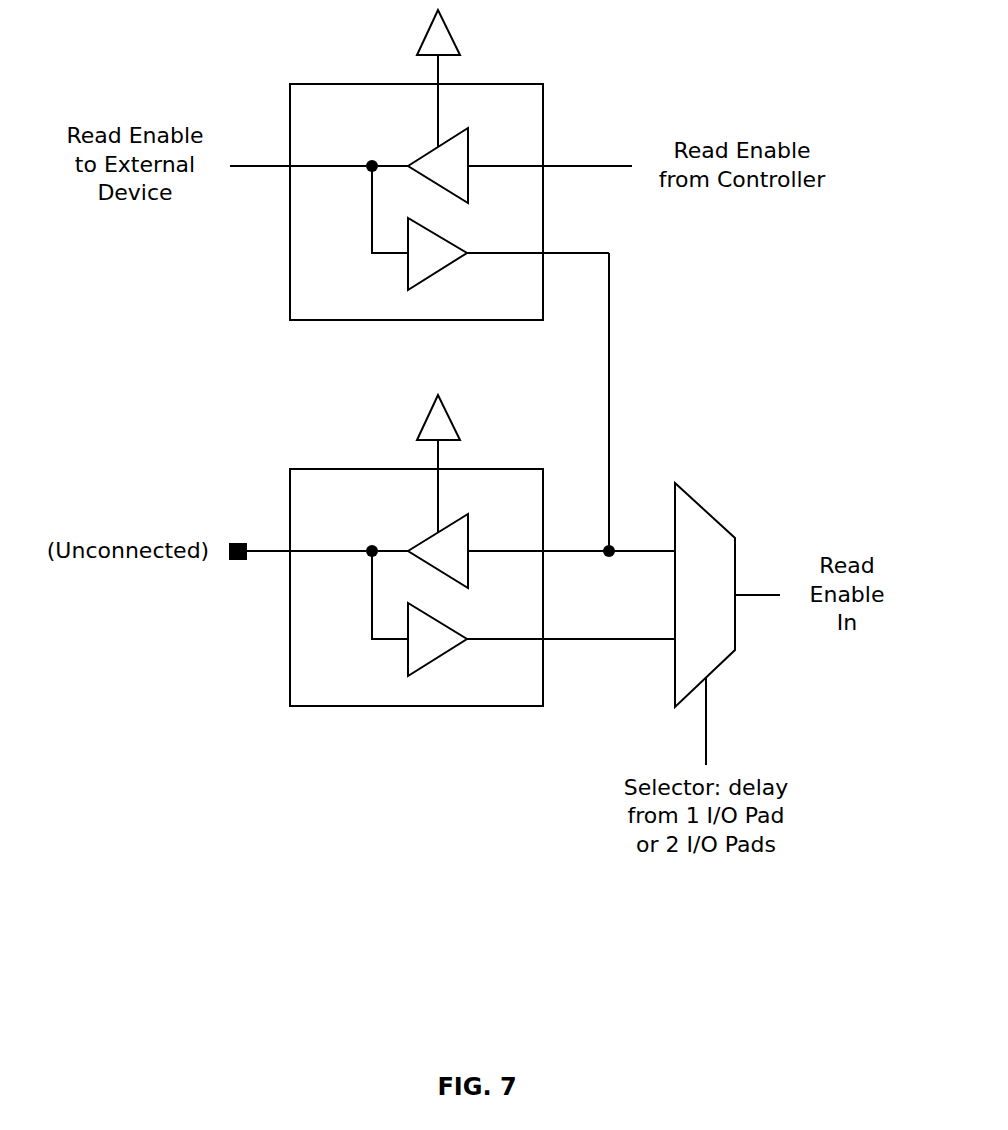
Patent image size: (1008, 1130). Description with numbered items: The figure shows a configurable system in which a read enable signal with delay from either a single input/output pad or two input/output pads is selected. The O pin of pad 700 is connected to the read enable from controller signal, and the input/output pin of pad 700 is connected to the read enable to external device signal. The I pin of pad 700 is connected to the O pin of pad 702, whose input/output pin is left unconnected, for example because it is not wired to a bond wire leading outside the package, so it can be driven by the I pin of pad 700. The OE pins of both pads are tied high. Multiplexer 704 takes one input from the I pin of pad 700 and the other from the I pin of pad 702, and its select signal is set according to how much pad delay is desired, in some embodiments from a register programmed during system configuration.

The I/O pad 700 is at (290, 203).
The I/O pad 702 is at (290, 588).
The multiplexer 704 is at (705, 510).